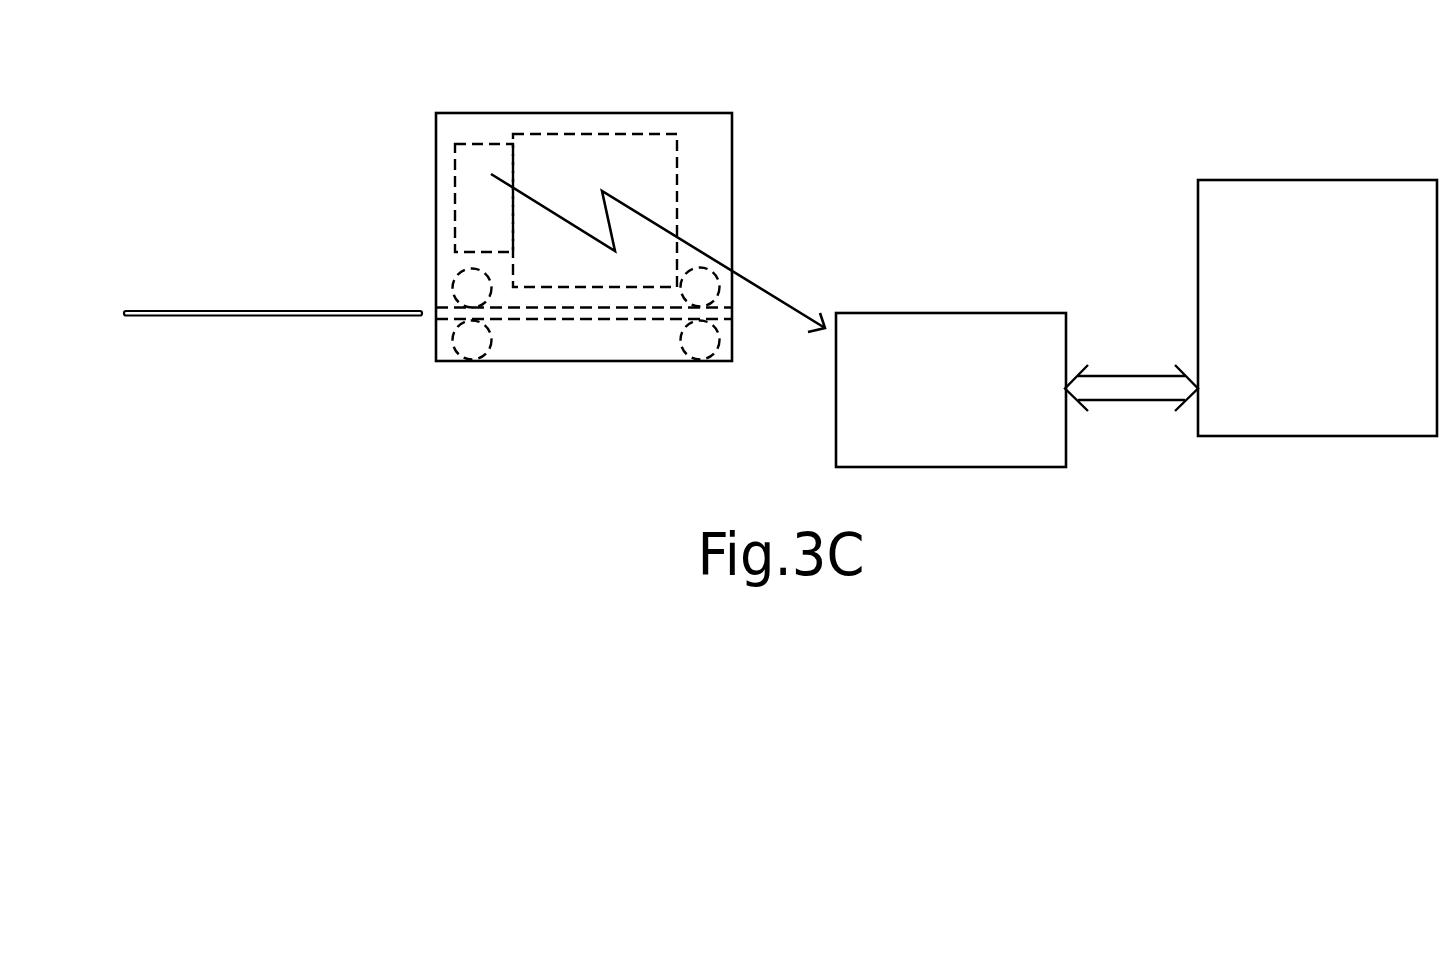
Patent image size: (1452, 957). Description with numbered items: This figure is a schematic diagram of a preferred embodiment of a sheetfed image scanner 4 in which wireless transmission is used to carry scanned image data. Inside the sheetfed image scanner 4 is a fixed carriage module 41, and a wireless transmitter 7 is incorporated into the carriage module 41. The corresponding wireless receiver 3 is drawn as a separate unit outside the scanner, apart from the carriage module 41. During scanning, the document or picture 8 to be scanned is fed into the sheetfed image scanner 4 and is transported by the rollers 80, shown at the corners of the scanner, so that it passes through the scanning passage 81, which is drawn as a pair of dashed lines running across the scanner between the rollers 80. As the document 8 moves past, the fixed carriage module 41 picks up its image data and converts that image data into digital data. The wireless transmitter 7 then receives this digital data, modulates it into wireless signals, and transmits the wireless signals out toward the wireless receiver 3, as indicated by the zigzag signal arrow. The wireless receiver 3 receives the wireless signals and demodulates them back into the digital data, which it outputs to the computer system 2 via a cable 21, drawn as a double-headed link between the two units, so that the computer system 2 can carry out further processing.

The computer system 2 is at (1369, 196).
The wireless receiver 3 is at (1009, 331).
The sheetfed image scanner 4 is at (632, 112).
The wireless transmitter 7 is at (468, 212).
The document or picture 8 is at (202, 310).
The cable 21 is at (1123, 391).
The carriage module 41 is at (653, 240).
The rollers 80 is at (470, 285).
The scanning passage 81 is at (568, 313).